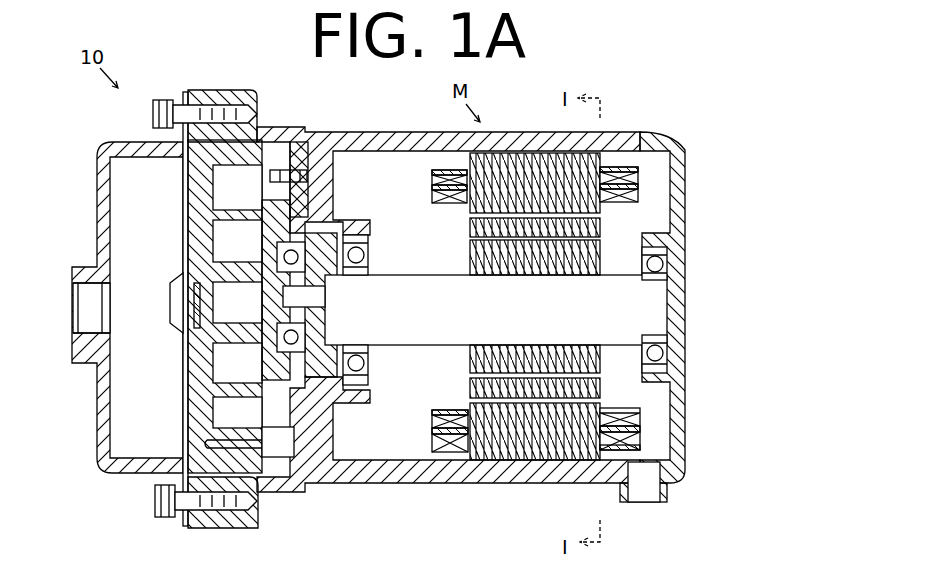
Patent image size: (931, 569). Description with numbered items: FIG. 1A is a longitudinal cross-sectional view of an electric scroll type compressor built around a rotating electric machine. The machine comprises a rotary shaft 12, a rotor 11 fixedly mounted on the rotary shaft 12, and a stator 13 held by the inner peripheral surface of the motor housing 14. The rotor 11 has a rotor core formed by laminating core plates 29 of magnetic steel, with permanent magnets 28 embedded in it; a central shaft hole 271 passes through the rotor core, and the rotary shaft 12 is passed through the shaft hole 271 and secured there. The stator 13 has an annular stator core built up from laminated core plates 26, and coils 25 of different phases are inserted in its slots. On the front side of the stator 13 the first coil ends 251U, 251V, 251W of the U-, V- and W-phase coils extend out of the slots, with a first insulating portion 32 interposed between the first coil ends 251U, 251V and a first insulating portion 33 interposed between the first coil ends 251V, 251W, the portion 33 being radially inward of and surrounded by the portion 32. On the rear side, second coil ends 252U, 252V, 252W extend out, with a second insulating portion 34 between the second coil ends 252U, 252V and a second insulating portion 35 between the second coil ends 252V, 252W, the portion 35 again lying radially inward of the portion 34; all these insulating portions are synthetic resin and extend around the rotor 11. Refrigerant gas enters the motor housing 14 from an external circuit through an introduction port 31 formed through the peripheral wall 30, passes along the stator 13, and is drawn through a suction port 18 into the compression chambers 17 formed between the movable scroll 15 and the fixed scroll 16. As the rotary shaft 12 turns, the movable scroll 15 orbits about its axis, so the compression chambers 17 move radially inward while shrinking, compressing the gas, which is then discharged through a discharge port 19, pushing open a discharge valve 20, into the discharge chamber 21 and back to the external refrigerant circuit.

The rotor 11 is at (369, 310).
The rotary shaft 12 is at (387, 337).
The stator 13 is at (778, 150).
The motor housing 14 is at (680, 136).
The movable scroll 15 is at (295, 414).
The fixed scroll 16 is at (190, 190).
The compression chambers 17 is at (250, 252).
The suction port 18 is at (302, 440).
The discharge port 19 is at (192, 313).
The discharge valve 20 is at (185, 292).
The discharge chamber 21 is at (160, 419).
The coils 25 is at (738, 175).
The core plates 26 is at (645, 149).
The permanent magnets 28 is at (470, 236).
The core plates 29 is at (472, 256).
The peripheral wall 30 is at (369, 480).
The introduction port 31 is at (650, 498).
The first insulating portion 32 is at (440, 172).
The first insulating portion 33 is at (435, 188).
The second insulating portion 34 is at (612, 203).
The second insulating portion 35 is at (640, 203).
The first coil ends 251U is at (448, 456).
The first coil ends 251V is at (432, 178).
The first coil ends 251W is at (448, 204).
The second coil ends 252U is at (642, 175).
The second coil ends 252V is at (642, 192).
The second coil ends 252W is at (642, 416).
The shaft hole 271 is at (470, 340).